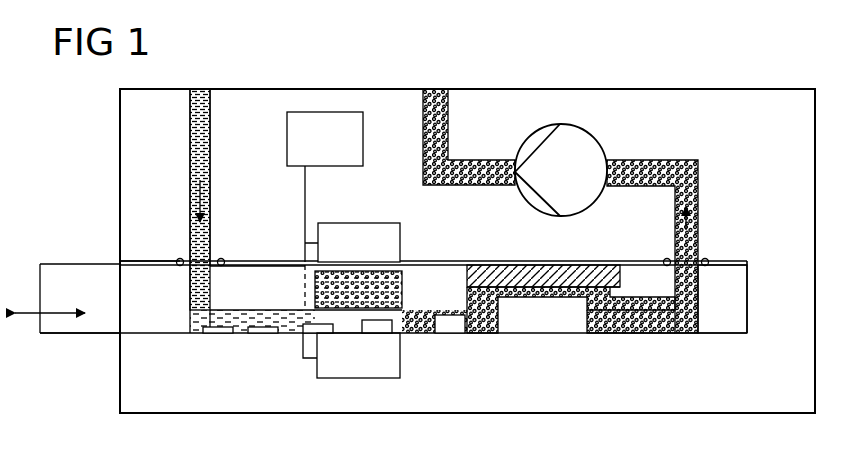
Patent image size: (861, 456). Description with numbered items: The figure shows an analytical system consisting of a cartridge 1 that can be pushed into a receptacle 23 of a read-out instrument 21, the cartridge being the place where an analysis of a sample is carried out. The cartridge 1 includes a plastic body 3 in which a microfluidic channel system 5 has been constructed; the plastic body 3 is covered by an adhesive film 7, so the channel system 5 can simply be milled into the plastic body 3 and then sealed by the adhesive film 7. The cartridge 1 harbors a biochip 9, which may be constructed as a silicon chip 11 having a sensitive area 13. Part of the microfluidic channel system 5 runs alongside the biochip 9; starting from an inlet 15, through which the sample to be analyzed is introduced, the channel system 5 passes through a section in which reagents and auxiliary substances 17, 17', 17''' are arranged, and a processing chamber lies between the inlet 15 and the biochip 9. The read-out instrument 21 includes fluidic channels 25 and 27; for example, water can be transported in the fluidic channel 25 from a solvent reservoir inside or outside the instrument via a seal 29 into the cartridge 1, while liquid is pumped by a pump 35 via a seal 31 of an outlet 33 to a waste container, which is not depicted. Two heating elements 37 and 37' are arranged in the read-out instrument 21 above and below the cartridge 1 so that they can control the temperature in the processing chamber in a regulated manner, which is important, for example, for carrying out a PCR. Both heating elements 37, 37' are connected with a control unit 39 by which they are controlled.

The cartridge 1 is at (35, 282).
The plastic body 3 is at (96, 304).
The microfluidic channel system 5 is at (353, 312).
The adhesive film 7 is at (96, 336).
The biochip 9 is at (540, 288).
The silicon chip 11 is at (486, 270).
The sensitive area 13 is at (596, 272).
The inlet 15 is at (196, 270).
The reagents and auxiliary substances 17 is at (252, 357).
The reagents and auxiliary substances 17' is at (267, 365).
The reagents and auxiliary substances 17''' is at (445, 354).
The read-out instrument 21 is at (733, 103).
The receptacle 23 is at (120, 262).
The fluidic channel 25 is at (190, 171).
The fluidic channel 27 is at (640, 160).
The seal 29 is at (223, 261).
The seal 31 is at (708, 266).
The outlet 33 is at (700, 278).
The pump 35 is at (577, 140).
The heating element 37 is at (359, 219).
The heating element 37' is at (351, 394).
The control unit 39 is at (287, 133).